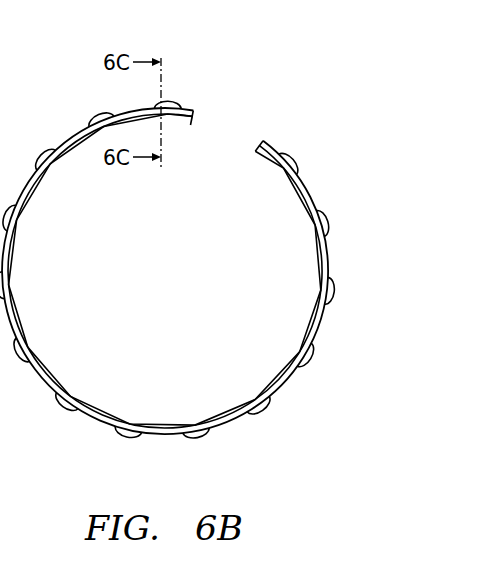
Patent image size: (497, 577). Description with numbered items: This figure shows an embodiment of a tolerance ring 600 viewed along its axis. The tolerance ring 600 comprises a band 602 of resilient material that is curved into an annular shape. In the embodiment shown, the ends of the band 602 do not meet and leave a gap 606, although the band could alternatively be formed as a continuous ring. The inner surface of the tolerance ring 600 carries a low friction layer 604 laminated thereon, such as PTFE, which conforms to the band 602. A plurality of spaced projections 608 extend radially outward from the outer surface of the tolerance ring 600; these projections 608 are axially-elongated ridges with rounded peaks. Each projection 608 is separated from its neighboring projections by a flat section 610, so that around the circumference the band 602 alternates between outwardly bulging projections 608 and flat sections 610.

The tolerance ring 600 is at (218, 235).
The band 602 is at (322, 262).
The low friction layer 604 is at (292, 200).
The gap 606 is at (232, 128).
The projections 608 is at (297, 160).
The flat section 610 is at (308, 196).